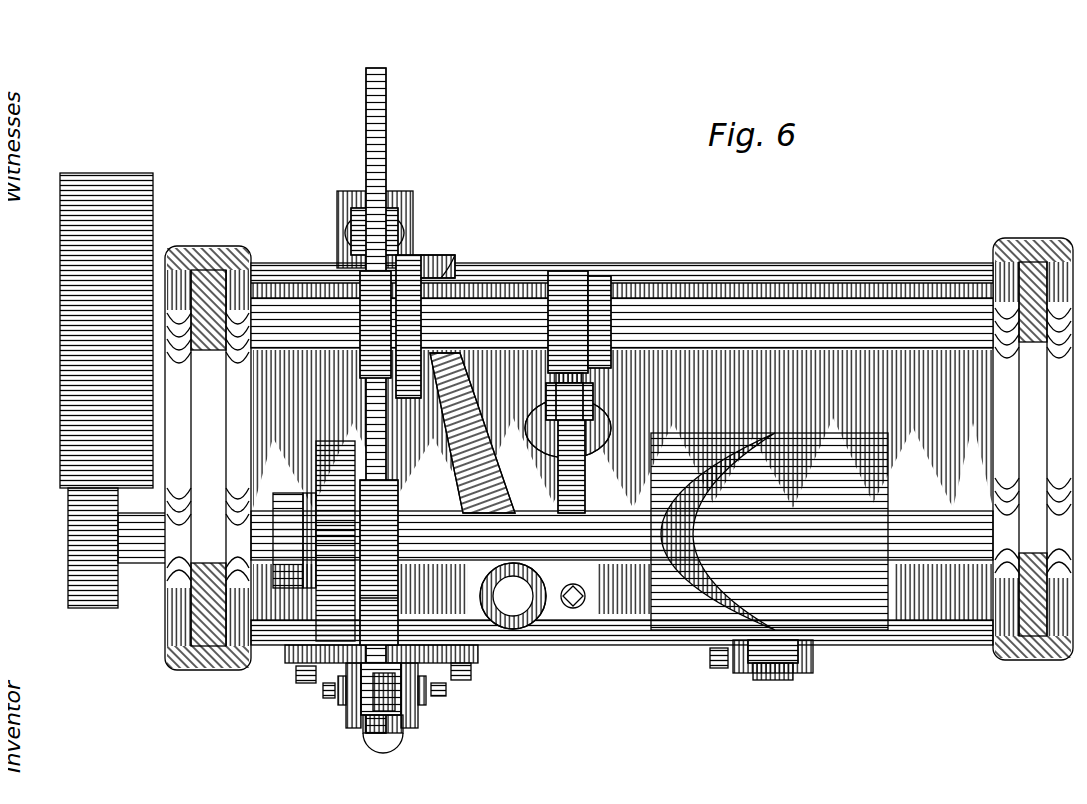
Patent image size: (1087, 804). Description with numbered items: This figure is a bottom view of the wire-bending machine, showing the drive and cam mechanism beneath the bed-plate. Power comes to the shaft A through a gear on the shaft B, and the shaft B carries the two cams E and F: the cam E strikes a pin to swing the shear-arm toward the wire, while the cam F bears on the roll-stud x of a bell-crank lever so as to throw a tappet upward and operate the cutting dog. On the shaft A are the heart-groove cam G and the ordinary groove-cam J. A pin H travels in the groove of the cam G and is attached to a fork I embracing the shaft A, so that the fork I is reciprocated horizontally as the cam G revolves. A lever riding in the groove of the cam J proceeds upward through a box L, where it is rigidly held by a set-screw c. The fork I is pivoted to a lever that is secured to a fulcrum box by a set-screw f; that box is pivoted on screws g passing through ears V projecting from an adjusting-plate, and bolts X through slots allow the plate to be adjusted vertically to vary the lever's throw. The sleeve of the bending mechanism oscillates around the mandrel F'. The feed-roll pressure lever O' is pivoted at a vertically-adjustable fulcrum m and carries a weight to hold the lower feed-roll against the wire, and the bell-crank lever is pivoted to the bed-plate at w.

The lever O' is at (394, 400).
The fulcrum or pivotal point m is at (332, 226).
The cam E is at (428, 246).
The cam F is at (579, 298).
The shaft B is at (830, 300).
The roll-stud x is at (569, 401).
The pivot of bell-crank lever w is at (605, 420).
The groove-cam J is at (769, 531).
The shaft A is at (926, 503).
The fork I is at (379, 562).
The mandrel F' is at (513, 596).
The set-screw c is at (702, 648).
The box L is at (806, 652).
The heart-groove cam G is at (262, 640).
The pin H is at (306, 574).
The bolts X is at (376, 699).
The nut j is at (320, 692).
The ears V is at (348, 720).
The set-screw f is at (376, 732).
The screws g is at (440, 684).